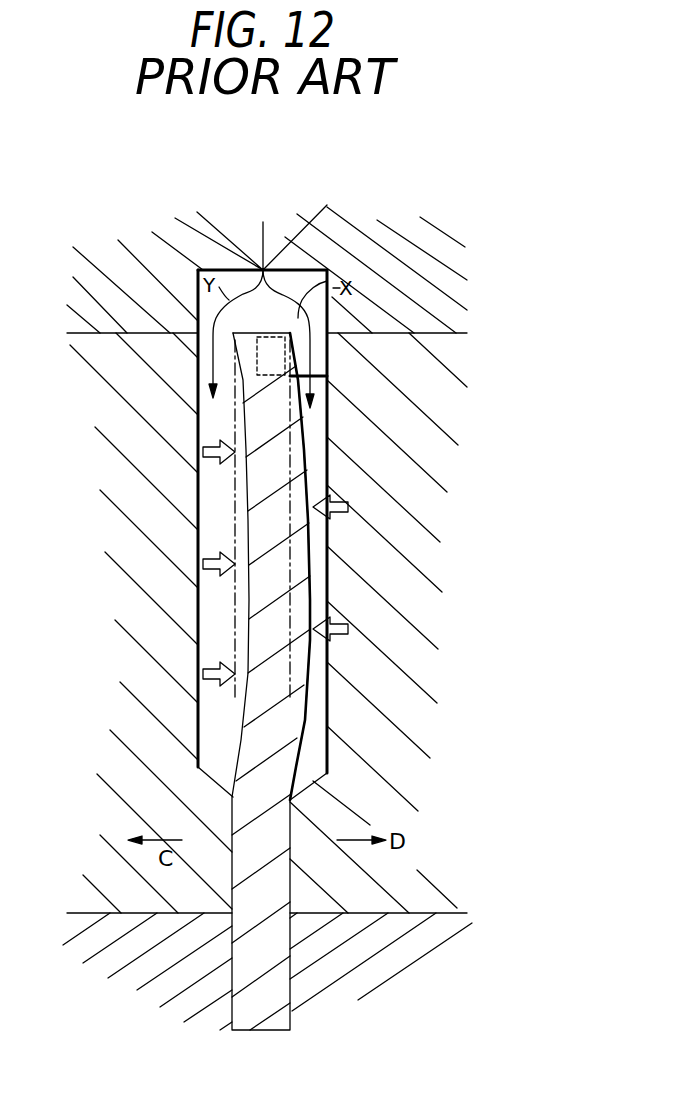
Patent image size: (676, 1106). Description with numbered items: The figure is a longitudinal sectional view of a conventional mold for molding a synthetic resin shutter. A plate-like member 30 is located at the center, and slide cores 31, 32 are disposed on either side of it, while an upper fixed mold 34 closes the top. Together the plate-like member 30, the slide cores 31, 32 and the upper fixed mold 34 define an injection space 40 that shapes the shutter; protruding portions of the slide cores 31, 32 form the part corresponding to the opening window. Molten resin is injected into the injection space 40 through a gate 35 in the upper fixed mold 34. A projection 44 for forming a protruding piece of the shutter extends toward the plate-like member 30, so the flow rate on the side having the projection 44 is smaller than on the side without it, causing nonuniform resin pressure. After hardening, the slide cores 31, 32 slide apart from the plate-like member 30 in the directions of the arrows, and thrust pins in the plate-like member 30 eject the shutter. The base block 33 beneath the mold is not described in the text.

The plate-like member 30 is at (297, 557).
The slide core 31 is at (393, 418).
The slide core 32 is at (137, 375).
The base block 33 is at (403, 939).
The upper fixed mold 34 is at (395, 272).
The gate 35 is at (264, 270).
The injection space 40 is at (318, 733).
The projection 44 is at (320, 353).